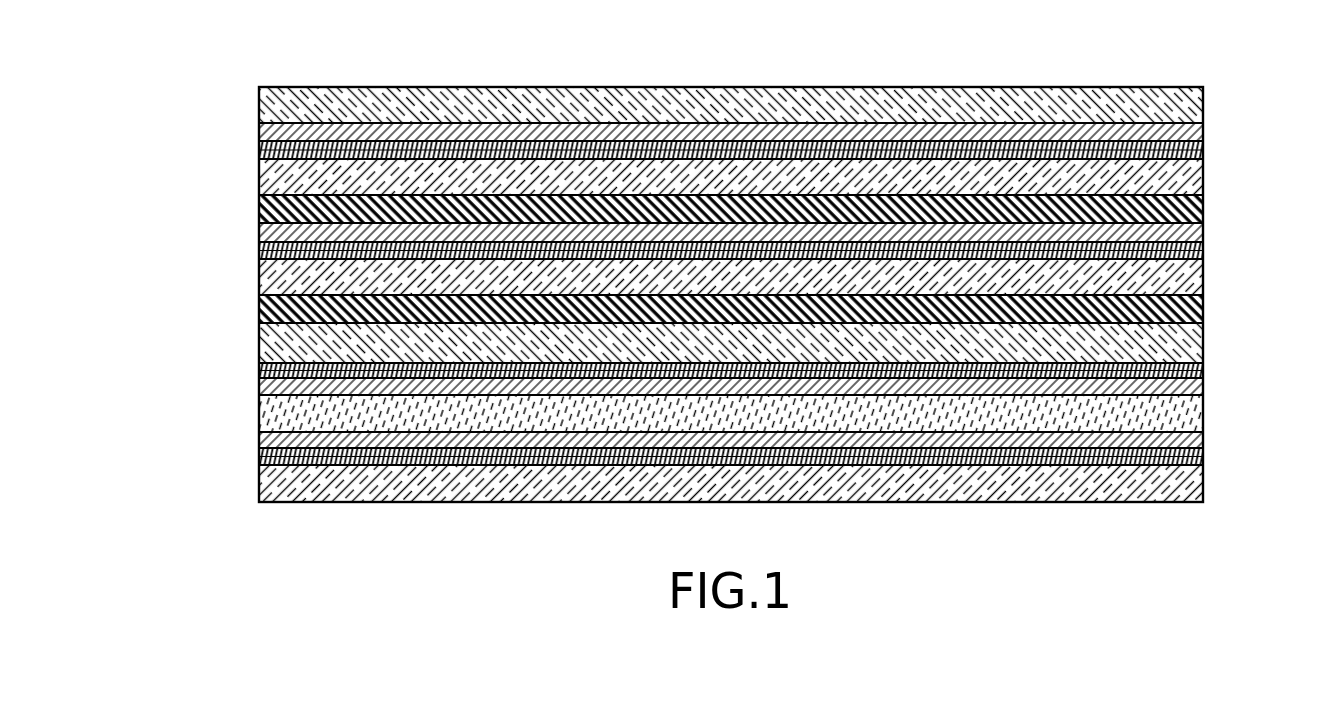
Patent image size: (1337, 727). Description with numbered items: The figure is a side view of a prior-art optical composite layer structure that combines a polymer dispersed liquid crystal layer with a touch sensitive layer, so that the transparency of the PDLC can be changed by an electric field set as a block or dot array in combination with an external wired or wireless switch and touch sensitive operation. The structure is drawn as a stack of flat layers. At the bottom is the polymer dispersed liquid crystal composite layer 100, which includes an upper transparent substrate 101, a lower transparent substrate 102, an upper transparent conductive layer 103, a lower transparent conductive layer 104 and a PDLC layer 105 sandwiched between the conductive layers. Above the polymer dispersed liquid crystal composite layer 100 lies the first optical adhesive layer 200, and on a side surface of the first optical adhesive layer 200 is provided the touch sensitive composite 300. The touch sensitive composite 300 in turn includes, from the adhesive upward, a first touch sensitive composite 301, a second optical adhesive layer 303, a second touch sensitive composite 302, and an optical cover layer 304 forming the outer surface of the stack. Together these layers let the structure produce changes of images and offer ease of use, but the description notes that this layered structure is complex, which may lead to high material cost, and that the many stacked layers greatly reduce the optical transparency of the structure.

The polymer dispersed liquid crystal composite layer 100 is at (710, 413).
The upper transparent substrate 101 is at (262, 338).
The lower transparent substrate 102 is at (262, 480).
The upper transparent conductive layer 103 is at (262, 383).
The lower transparent conductive layer 104 is at (262, 440).
The PDLC layer 105 is at (262, 415).
The first optical adhesive layer 200 is at (1203, 308).
The touch sensitive composite 300 is at (711, 180).
The first touch sensitive composite 301 is at (251, 223).
The second touch sensitive composite 302 is at (695, 116).
The second optical adhesive layer 303 is at (262, 204).
The optical cover layer 304 is at (698, 80).